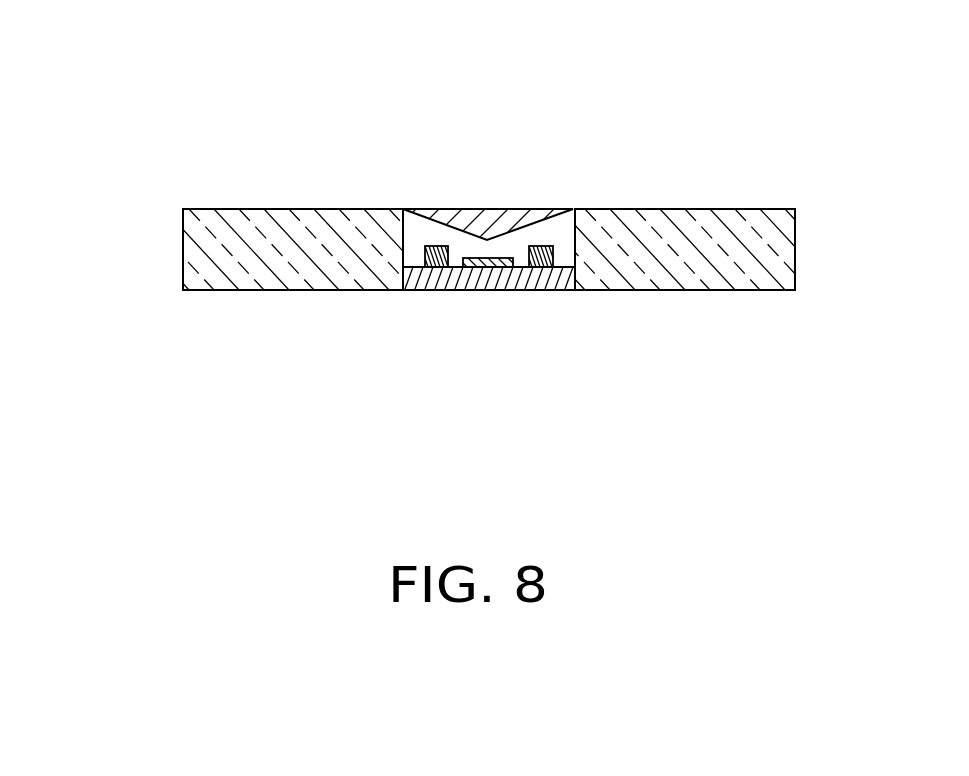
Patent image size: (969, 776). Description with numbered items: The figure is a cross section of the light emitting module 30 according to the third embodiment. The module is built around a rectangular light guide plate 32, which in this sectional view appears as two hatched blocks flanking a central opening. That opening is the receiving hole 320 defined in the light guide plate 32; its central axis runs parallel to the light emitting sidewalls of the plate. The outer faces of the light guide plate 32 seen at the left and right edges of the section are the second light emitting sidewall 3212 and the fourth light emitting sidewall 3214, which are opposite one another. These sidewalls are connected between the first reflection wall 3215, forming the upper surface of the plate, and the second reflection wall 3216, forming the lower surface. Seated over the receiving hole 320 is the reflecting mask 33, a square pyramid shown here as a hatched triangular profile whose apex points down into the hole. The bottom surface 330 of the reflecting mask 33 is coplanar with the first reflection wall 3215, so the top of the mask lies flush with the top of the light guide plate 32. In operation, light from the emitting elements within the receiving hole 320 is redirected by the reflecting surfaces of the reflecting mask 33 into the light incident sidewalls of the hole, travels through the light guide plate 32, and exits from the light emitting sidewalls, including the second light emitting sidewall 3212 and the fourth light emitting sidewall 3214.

The light emitting module 30 is at (492, 192).
The light guide plate 32 is at (735, 273).
The second light emitting sidewall 3212 is at (176, 247).
The fourth light emitting sidewall 3214 is at (808, 249).
The first reflection wall 3215 is at (720, 198).
The second reflection wall 3216 is at (329, 300).
The receiving hole 320 is at (558, 238).
The reflecting mask 33 is at (502, 221).
The bottom surface 330 is at (457, 197).